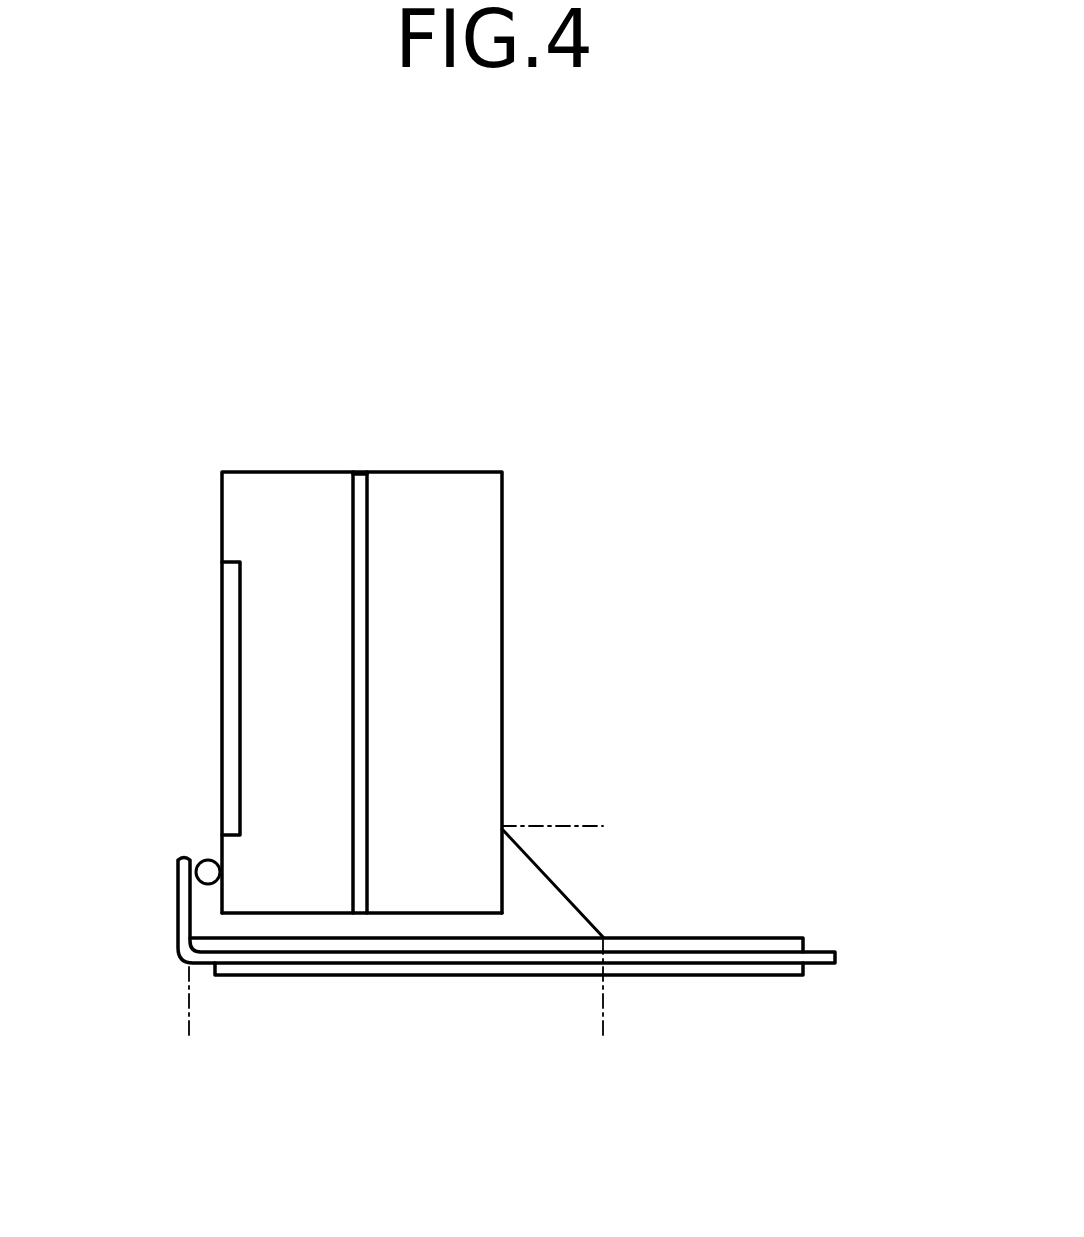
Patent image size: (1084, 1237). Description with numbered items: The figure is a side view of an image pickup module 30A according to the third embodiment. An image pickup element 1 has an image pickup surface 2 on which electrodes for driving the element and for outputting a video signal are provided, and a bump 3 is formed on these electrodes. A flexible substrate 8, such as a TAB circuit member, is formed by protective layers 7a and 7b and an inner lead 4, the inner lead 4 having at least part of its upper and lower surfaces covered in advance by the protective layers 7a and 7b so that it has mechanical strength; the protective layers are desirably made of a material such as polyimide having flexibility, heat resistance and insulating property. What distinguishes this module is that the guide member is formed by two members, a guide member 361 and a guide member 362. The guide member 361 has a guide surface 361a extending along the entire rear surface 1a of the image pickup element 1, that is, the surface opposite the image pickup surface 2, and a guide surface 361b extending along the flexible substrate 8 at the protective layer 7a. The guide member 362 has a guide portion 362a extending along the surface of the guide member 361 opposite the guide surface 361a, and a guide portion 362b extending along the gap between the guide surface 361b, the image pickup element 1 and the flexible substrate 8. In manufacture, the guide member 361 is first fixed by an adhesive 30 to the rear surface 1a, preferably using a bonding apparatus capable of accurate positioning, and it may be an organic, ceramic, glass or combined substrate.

The image pickup module 30A is at (720, 428).
The image pickup element 1 is at (222, 487).
The rear surface 1a is at (358, 503).
The image pickup surface 2 is at (221, 609).
The bump 3 is at (208, 859).
The inner lead 4 is at (178, 925).
The protective layer 7a is at (767, 937).
The protective layer 7b is at (740, 977).
The flexible substrate 8 is at (848, 938).
The adhesive 30 is at (362, 467).
The guide member 361 is at (477, 589).
The guide surface 361a is at (372, 706).
The guide surface 361b is at (433, 913).
The guide member 362 is at (681, 905).
The guide portion 362a is at (605, 826).
The guide portion 362b is at (615, 1097).